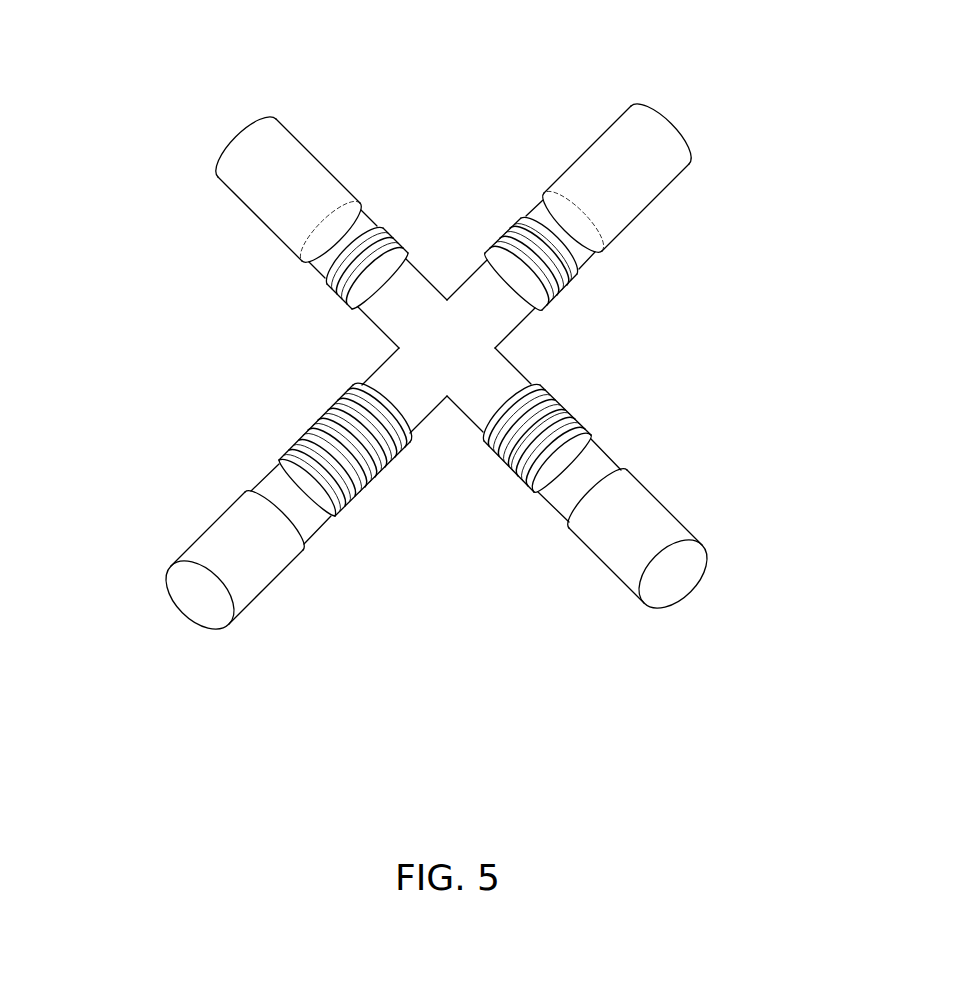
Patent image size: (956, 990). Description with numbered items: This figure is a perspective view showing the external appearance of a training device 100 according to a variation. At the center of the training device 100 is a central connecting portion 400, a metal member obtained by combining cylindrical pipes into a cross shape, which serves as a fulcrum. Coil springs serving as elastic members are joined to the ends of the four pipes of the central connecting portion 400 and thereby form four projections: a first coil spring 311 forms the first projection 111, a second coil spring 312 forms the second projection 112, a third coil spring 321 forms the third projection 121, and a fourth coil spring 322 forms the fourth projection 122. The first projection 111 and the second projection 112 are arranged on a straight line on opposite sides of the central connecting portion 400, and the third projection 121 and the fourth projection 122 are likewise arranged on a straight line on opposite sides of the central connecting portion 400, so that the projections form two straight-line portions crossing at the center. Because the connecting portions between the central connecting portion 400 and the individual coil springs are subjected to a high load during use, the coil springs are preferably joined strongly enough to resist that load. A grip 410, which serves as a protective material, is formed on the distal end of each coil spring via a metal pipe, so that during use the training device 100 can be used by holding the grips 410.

The training device 100 is at (133, 45).
The central connecting portion 400 is at (418, 290).
The first coil spring 311 is at (313, 428).
The second coil spring 312 is at (557, 276).
The third coil spring 321 is at (570, 412).
The fourth coil spring 322 is at (395, 236).
The first projection 111 is at (392, 499).
The second projection 112 is at (503, 197).
The third projection 121 is at (620, 377).
The fourth projection 122 is at (297, 293).
The grip 410 is at (232, 171).